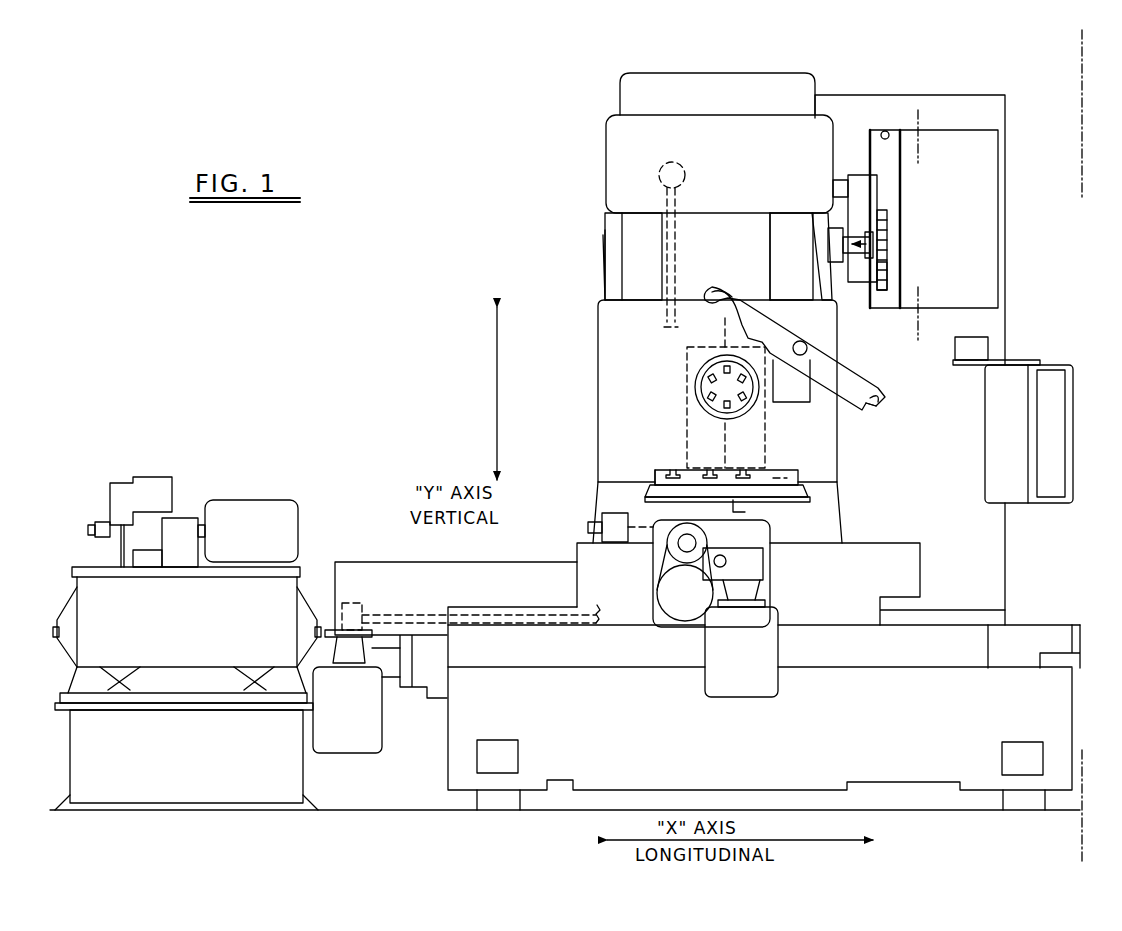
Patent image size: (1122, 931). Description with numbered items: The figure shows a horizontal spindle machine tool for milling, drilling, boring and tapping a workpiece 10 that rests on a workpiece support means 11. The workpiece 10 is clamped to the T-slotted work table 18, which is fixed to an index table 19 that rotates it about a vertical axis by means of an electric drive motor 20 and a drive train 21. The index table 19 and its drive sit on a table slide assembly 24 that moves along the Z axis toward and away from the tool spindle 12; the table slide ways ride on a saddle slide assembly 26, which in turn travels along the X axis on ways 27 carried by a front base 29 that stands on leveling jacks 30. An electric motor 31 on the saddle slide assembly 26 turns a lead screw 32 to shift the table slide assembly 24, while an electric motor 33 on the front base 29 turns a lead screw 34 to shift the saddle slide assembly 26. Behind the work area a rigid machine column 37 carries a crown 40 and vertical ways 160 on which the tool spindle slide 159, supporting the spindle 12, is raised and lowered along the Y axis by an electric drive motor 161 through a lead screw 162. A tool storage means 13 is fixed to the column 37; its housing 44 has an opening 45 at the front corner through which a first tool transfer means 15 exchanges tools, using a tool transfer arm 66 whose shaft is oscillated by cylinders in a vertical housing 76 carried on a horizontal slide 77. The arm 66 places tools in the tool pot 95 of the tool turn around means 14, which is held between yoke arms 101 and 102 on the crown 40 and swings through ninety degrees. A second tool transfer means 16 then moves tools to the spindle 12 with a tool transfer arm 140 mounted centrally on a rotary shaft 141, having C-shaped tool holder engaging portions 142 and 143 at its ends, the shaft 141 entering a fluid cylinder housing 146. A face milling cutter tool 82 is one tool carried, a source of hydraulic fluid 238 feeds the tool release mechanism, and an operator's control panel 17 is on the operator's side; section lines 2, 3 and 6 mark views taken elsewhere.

The section line 2- 2 is at (1116, 53).
The section line 3- 3 is at (921, 140).
The section line 6- 6 is at (723, 330).
The workpiece 10 is at (686, 409).
The workpiece support means 11 is at (656, 472).
The tool spindle 12 is at (703, 410).
The tool storage means 13 is at (968, 95).
The tool turn around means 14 is at (900, 245).
The first tool transfer means 15 is at (888, 223).
The second tool transfer means 16 is at (867, 407).
The operator's control panel 17 is at (1051, 480).
The work table 18 is at (800, 476).
The index table 19 is at (825, 490).
The electric drive motor 20 is at (600, 527).
The drive train 21 is at (748, 506).
The table slide assembly 24 is at (836, 530).
The saddle slide assembly 26 is at (903, 584).
The ways 27 is at (990, 621).
The front base 29 is at (1062, 735).
The leveling jacks 30 is at (508, 802).
The electric motor 31 is at (742, 680).
The lead screw 32 is at (727, 563).
The electric motor 33 is at (348, 742).
The lead screw 34 is at (385, 612).
The machine column 37 is at (604, 278).
The crown 40 is at (607, 165).
The housing 44 is at (993, 126).
The opening 45 is at (886, 130).
The tool transfer arm 66 is at (888, 277).
The vertical housing 76 is at (866, 194).
The horizontal slide 77 is at (839, 180).
The face milling cutter tool 82 is at (695, 382).
The tool pot 95 is at (830, 242).
The yoke arm 101 is at (826, 268).
The yoke arm 102 is at (813, 213).
The tool transfer arm 140 is at (836, 370).
The rotary shaft 141 is at (807, 346).
The tool holder engaging portion 142 is at (708, 300).
The tool holder engaging portion 143 is at (891, 384).
The fluid cylinder housing 146 is at (790, 394).
The tool spindle slide 159 is at (598, 355).
The vertical ways 160 is at (633, 232).
The electric drive motor 161 is at (680, 164).
The lead screw 162 is at (680, 283).
The source of hydraulic fluid 238 is at (252, 515).